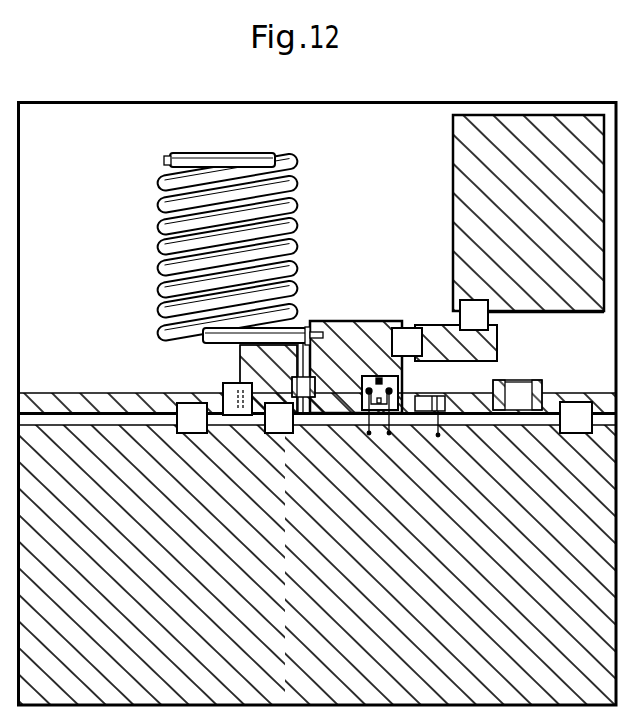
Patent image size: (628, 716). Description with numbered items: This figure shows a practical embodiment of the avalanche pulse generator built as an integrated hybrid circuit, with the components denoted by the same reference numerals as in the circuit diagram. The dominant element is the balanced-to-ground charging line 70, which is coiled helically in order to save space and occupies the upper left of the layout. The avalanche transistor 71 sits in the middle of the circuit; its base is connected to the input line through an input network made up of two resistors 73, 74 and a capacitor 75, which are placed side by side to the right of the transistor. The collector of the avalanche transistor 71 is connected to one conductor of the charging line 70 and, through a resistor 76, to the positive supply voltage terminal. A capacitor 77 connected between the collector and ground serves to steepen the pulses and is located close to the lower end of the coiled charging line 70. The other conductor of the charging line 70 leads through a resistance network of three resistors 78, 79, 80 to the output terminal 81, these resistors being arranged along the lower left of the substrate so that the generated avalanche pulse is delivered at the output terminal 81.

The charging line 70 is at (287, 226).
The avalanche transistor 71 is at (388, 380).
The resistor 73 is at (575, 408).
The resistor 74 is at (440, 396).
The capacitor 75 is at (522, 388).
The resistor 76 is at (460, 313).
The capacitor 77 is at (313, 379).
The resistor 78 is at (278, 427).
The resistor 79 is at (192, 427).
The resistor 80 is at (227, 387).
The output terminal 81 is at (67, 400).